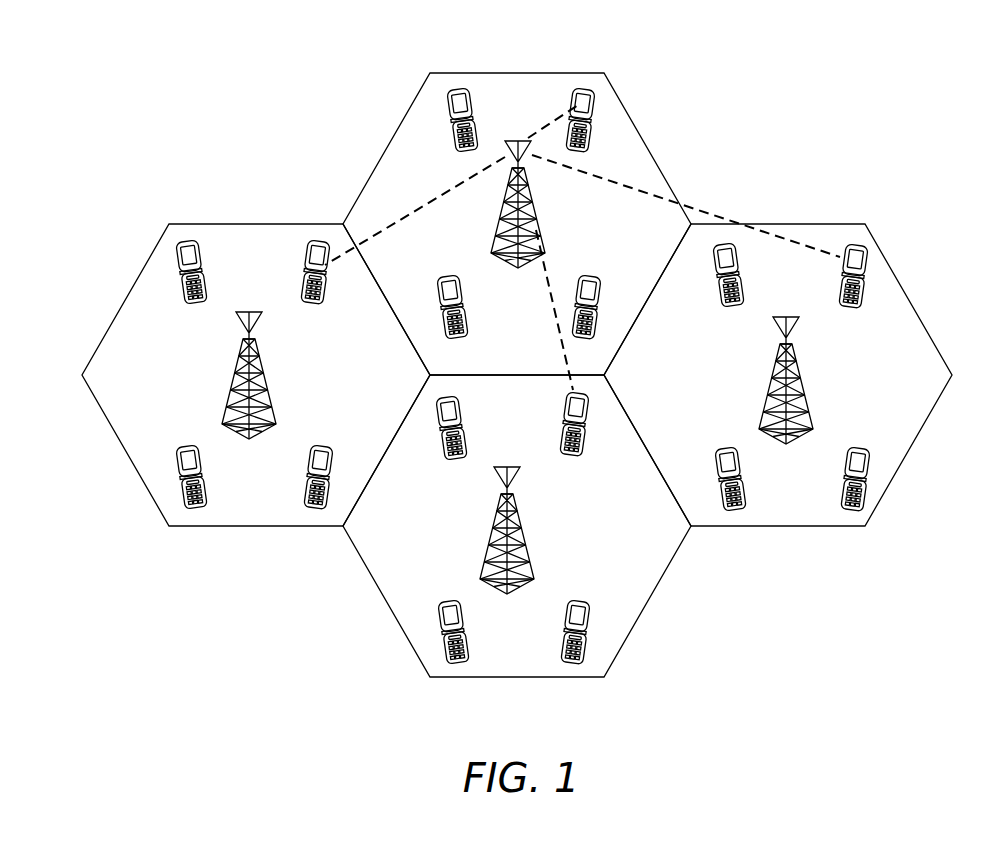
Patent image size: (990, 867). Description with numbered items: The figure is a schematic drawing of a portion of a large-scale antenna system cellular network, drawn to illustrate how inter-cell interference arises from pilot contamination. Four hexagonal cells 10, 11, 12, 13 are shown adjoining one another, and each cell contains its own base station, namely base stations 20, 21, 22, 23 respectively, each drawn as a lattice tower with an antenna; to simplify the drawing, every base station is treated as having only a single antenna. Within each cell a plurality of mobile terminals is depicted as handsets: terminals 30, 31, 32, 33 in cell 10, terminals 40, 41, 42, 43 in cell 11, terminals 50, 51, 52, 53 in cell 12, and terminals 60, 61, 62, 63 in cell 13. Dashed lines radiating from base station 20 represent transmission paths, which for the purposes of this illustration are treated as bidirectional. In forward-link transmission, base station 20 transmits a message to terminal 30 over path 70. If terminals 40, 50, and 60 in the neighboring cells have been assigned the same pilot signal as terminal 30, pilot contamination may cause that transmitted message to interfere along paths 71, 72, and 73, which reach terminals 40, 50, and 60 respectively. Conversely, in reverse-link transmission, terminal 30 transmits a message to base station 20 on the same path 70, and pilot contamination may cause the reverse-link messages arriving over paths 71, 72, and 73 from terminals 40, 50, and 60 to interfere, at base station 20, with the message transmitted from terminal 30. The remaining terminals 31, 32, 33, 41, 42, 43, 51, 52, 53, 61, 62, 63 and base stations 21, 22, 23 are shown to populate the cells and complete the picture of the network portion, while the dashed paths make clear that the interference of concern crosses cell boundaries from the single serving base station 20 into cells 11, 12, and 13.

The cell 10 is at (644, 142).
The cell 11 is at (901, 286).
The cell 12 is at (637, 620).
The cell 13 is at (128, 294).
The base station 20 is at (518, 272).
The base station 21 is at (806, 386).
The base station 22 is at (532, 562).
The base station 23 is at (270, 382).
The mobile terminal 30 is at (587, 88).
The mobile terminal 31 is at (594, 278).
The mobile terminal 32 is at (450, 277).
The mobile terminal 33 is at (457, 88).
The mobile terminal 40 is at (857, 246).
The mobile terminal 41 is at (853, 510).
The mobile terminal 42 is at (732, 510).
The mobile terminal 43 is at (722, 286).
The mobile terminal 50 is at (584, 448).
The mobile terminal 51 is at (574, 664).
The mobile terminal 52 is at (454, 664).
The mobile terminal 53 is at (440, 452).
The mobile terminal 60 is at (318, 241).
The mobile terminal 61 is at (315, 508).
The mobile terminal 62 is at (194, 508).
The mobile terminal 63 is at (187, 241).
The path 70 is at (551, 119).
The path 71 is at (800, 243).
The path 72 is at (546, 273).
The path 73 is at (417, 211).